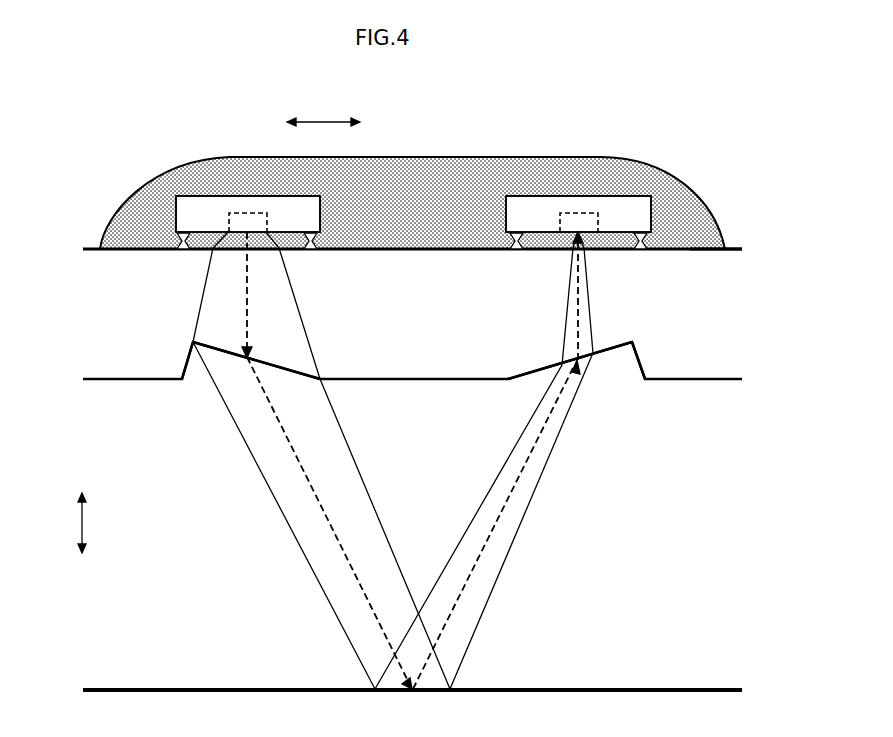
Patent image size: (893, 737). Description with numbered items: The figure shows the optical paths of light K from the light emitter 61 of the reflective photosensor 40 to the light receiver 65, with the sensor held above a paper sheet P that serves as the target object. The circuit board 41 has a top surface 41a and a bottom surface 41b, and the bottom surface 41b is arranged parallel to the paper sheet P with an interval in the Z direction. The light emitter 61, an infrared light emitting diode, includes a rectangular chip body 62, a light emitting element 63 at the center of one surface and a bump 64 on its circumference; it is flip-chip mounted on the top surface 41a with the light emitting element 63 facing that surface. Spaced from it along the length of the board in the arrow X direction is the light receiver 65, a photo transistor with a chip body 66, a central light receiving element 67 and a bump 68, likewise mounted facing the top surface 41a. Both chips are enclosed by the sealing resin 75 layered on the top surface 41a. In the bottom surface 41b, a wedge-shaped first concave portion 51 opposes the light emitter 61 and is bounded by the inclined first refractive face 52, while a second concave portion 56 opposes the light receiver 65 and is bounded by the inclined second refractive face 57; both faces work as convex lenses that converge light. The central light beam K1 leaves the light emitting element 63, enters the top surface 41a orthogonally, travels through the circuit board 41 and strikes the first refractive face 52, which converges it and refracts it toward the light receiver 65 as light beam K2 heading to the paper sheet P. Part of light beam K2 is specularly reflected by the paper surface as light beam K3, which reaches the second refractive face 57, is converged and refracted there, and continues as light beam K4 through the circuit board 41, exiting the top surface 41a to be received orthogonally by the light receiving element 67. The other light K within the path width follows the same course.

The reflective photosensor 40 is at (674, 164).
The circuit board 41 is at (92, 244).
The top surface 41a is at (735, 249).
The bottom surface 41b is at (712, 380).
The first concave portion 51 is at (303, 382).
The first refractive face 52 is at (283, 372).
The second concave portion 56 is at (511, 384).
The second refractive face 57 is at (535, 372).
The light emitter 61 is at (188, 190).
The chip body 62 is at (210, 203).
The light emitting element 63 is at (249, 213).
The bump 64 is at (178, 251).
The light receiver 65 is at (518, 190).
The chip body 66 is at (543, 203).
The light receiving element 67 is at (580, 213).
The bump 68 is at (515, 251).
The sealing resin 75 is at (401, 157).
The light K is at (203, 290).
The light beam K1 is at (247, 330).
The light beam K2 is at (297, 457).
The light beam K3 is at (528, 457).
The light beam K4 is at (580, 332).
The paper sheet P is at (663, 690).
The arrow X direction X is at (323, 112).
The Z direction Z is at (74, 523).